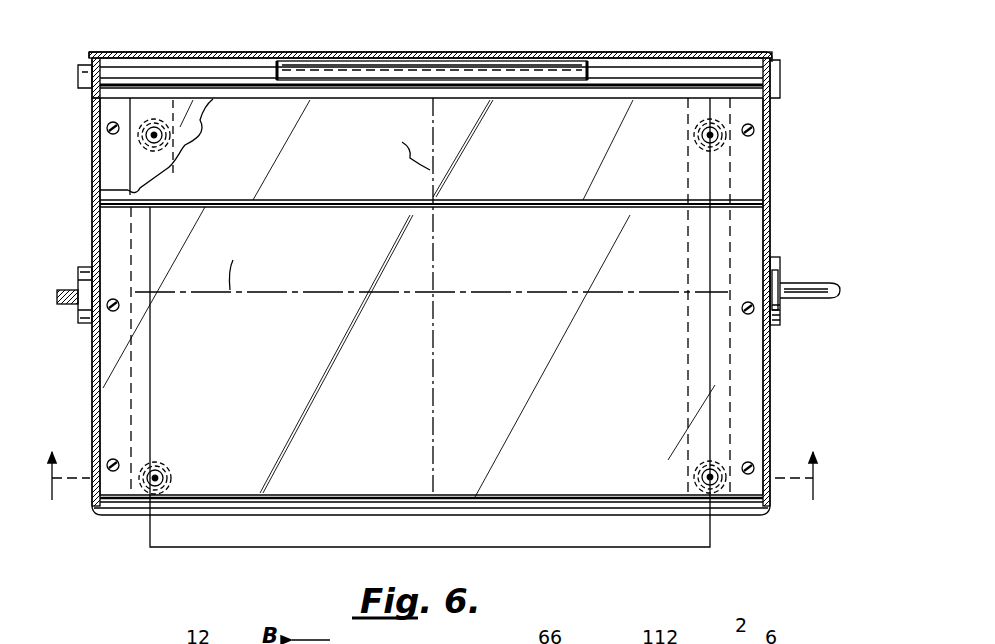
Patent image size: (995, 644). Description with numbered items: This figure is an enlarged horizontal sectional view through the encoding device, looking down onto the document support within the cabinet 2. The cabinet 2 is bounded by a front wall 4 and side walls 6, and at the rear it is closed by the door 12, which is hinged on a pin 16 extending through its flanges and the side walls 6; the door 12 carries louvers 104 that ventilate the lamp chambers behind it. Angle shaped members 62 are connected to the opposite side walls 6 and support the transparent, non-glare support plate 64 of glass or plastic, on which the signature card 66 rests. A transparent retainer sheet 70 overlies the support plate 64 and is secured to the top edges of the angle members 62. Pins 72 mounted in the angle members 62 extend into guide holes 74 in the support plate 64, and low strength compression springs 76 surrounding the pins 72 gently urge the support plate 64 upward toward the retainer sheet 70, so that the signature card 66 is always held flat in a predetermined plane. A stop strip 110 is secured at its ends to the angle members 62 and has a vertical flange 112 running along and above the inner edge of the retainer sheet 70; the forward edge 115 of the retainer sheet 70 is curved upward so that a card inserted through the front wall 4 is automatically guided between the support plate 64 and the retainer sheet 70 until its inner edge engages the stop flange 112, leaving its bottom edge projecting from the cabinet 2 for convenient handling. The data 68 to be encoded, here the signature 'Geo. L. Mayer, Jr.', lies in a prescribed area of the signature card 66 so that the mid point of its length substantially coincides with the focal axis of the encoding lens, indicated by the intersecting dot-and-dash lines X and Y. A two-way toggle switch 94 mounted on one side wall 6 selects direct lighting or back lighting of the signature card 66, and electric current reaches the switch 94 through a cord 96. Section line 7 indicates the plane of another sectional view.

The cabinet 2 is at (186, 43).
The front wall 4 is at (98, 516).
The side wall 6 is at (92, 410).
The section line 7- 7 is at (429, 496).
The rear door 12 is at (673, 58).
The pin 16 is at (636, 72).
The angle shaped member 62 is at (106, 172).
The support plate 64 is at (195, 150).
The signature card 66 is at (209, 550).
The data 68 is at (325, 315).
The retainer sheet 70 is at (416, 297).
The pin 72 is at (732, 532).
The guide hole 74 is at (166, 139).
The compression spring 76 is at (172, 125).
The toggle switch 94 is at (820, 290).
The cord 96 is at (74, 295).
The louvers 104 is at (326, 62).
The stop strip 110 is at (757, 133).
The vertical flange 112 is at (492, 212).
The forward edge 115 is at (240, 505).
The dot-and-dash line X is at (408, 295).
The dot-and-dash line Y is at (431, 264).